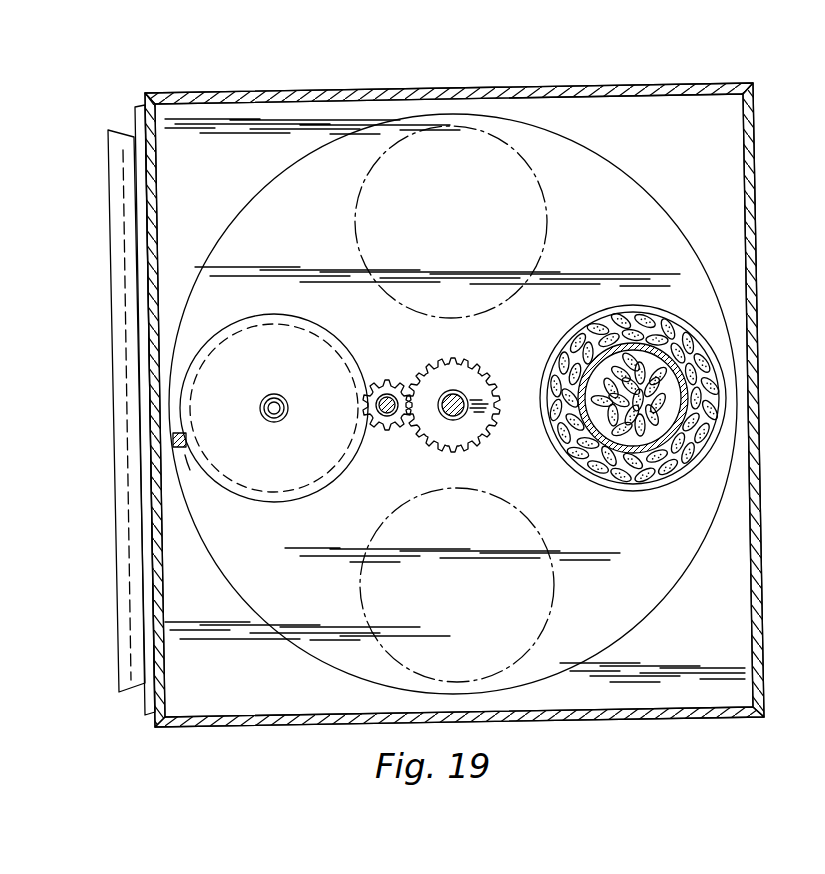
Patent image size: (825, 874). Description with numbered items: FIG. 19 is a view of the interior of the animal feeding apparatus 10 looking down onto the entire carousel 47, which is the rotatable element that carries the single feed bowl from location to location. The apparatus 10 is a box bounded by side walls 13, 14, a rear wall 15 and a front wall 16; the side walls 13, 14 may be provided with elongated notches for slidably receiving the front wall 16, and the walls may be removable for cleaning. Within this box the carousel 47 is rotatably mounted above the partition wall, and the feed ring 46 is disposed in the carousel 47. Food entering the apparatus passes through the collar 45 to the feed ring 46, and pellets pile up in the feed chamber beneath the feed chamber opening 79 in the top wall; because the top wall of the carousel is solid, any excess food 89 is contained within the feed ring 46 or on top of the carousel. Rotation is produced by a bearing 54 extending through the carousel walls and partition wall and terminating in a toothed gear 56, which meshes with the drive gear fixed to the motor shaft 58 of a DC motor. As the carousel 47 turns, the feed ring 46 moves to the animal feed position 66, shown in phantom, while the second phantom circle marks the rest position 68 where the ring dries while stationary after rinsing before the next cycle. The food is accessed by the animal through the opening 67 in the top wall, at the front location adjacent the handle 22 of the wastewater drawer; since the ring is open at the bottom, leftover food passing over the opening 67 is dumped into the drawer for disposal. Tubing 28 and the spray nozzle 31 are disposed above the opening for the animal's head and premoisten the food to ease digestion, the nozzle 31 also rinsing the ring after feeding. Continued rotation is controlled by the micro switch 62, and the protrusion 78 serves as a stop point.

The apparatus 10 is at (453, 60).
The side wall 13 is at (755, 207).
The side wall 14 is at (155, 697).
The rear wall 15 is at (312, 89).
The front wall 16 is at (648, 719).
The handle 22 is at (121, 142).
The tubing 28 is at (271, 394).
The spray nozzle 31 is at (288, 407).
The collar 45 is at (572, 463).
The feed ring 46 is at (585, 322).
The carousel 47 is at (320, 630).
The bearing 54 is at (480, 430).
The toothed gear 56 is at (470, 372).
The motor shaft 58 is at (386, 432).
The micro switch 62 is at (181, 428).
The animal feed position 66 is at (352, 590).
The opening 67 is at (310, 475).
The rest position 68 is at (356, 224).
The protrusion 78 is at (196, 462).
The feed chamber opening 79 is at (653, 348).
The excess food 89 is at (640, 458).